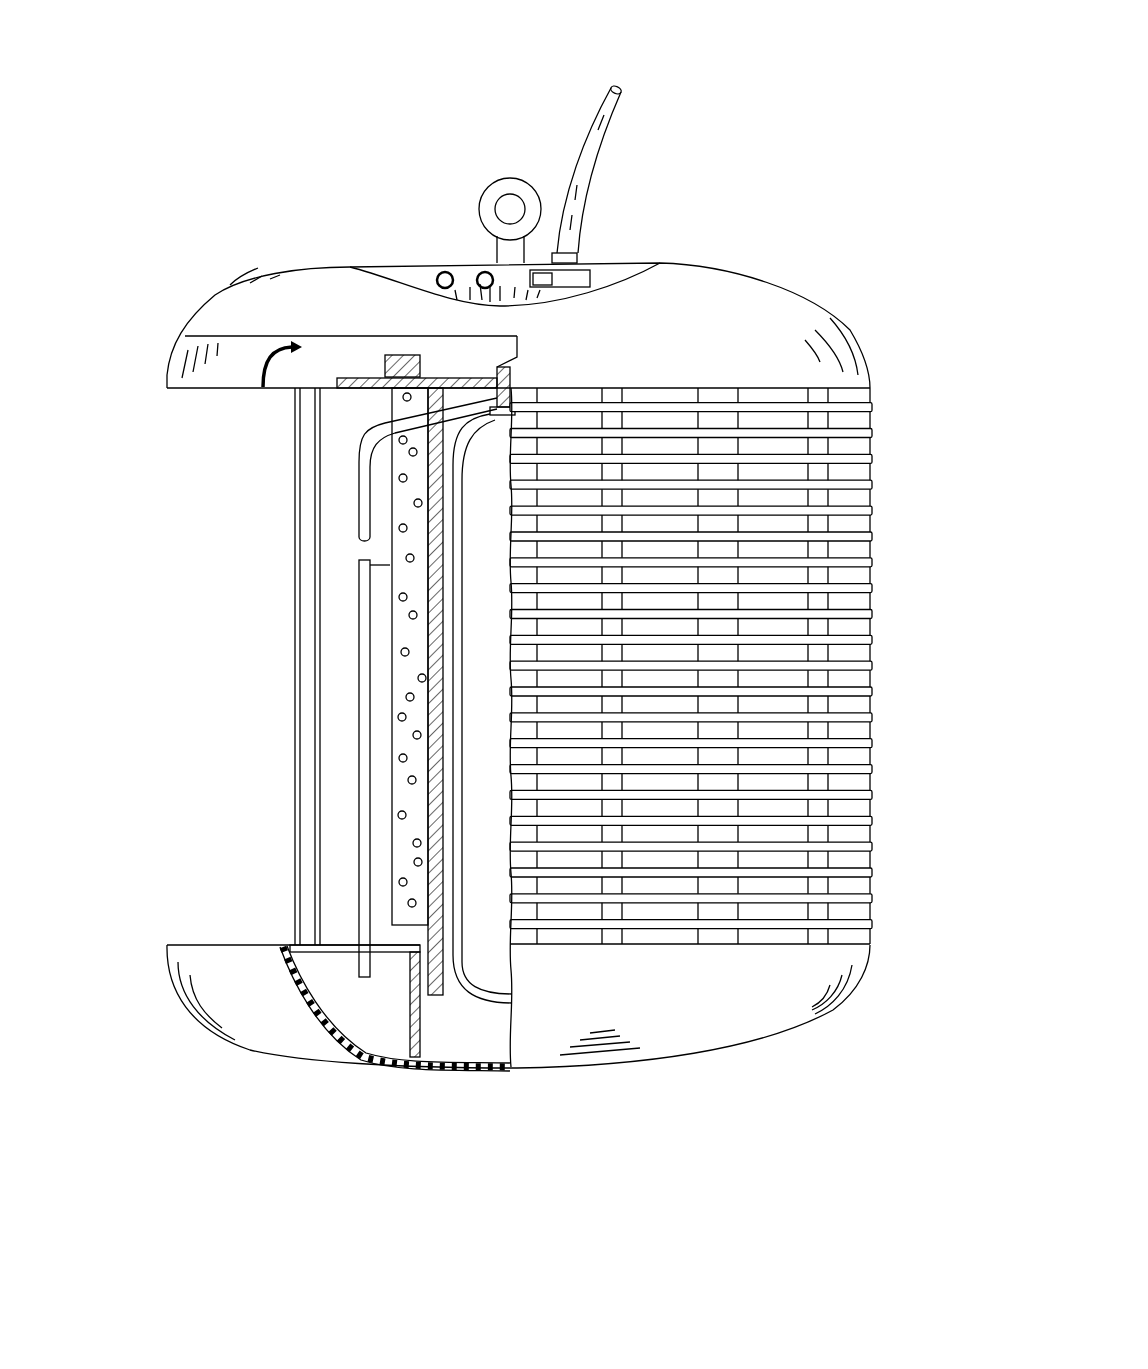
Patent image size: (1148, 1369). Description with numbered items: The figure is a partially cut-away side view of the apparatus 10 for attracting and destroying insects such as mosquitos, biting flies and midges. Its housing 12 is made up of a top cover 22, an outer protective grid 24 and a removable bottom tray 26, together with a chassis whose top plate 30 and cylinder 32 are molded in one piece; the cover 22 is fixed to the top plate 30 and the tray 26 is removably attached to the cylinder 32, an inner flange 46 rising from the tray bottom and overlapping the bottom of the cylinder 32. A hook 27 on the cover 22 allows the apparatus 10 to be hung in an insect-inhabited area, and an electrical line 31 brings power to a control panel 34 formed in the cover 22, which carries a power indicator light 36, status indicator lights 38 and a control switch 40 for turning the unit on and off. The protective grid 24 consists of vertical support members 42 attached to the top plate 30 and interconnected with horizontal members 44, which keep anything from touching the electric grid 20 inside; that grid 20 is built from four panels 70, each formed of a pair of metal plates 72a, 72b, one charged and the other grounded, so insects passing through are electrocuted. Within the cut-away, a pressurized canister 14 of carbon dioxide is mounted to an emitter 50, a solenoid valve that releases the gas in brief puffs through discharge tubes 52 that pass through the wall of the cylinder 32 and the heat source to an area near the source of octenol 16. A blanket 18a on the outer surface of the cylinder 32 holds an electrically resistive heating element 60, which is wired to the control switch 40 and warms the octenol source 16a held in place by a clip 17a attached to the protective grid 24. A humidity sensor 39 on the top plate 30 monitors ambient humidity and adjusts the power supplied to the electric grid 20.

The apparatus 10 is at (744, 110).
The housing 12 is at (867, 336).
The pressurized canister 14 is at (483, 983).
The source of octenol 16 is at (314, 344).
The octenol source 16a is at (360, 627).
The clip 17a is at (360, 968).
The blanket 18a is at (403, 802).
The electric grid 20 is at (288, 493).
The top cover 22 is at (770, 300).
The outer protective grid 24 is at (872, 612).
The removable bottom tray 26 is at (688, 1043).
The hook 27 is at (503, 182).
The top plate 30 is at (358, 338).
The electrical line 31 is at (595, 113).
The cylinder 32 is at (427, 865).
The control panel 34 is at (620, 278).
The power indicator light 36 is at (443, 270).
The status indicator lights 38 is at (482, 271).
The humidity sensor 39 is at (385, 357).
The control switch 40 is at (580, 275).
The vertical support members 42 is at (727, 497).
The horizontal members 44 is at (872, 793).
The inner flange 46 is at (408, 1013).
The emitter 50 is at (497, 367).
The discharge tubes 52 is at (362, 513).
The heating element 60 is at (410, 697).
The panel 70 is at (307, 593).
The metal plate 72a is at (293, 728).
The metal plate 72b is at (313, 760).